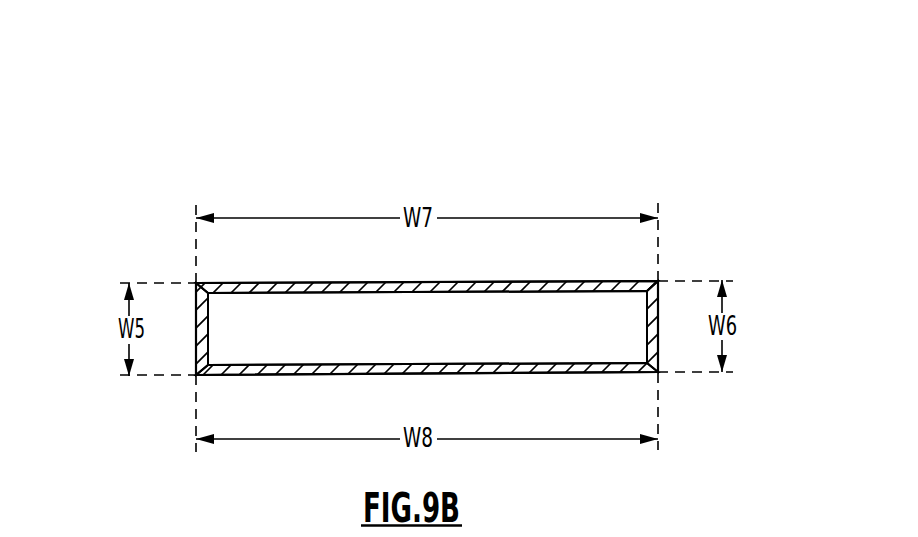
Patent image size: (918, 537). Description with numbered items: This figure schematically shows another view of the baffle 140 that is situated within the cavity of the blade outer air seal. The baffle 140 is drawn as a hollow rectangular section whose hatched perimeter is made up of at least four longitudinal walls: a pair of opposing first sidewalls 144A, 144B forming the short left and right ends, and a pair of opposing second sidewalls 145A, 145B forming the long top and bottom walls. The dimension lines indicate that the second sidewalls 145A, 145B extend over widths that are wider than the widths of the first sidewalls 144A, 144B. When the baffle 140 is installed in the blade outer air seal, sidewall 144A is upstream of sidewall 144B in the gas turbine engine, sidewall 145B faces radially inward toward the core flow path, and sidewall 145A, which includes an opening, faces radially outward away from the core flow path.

The baffle 140 is at (418, 269).
The first sidewall 144A is at (208, 326).
The first sidewall 144B is at (647, 333).
The second sidewall 145A is at (330, 293).
The second sidewall 145B is at (434, 365).